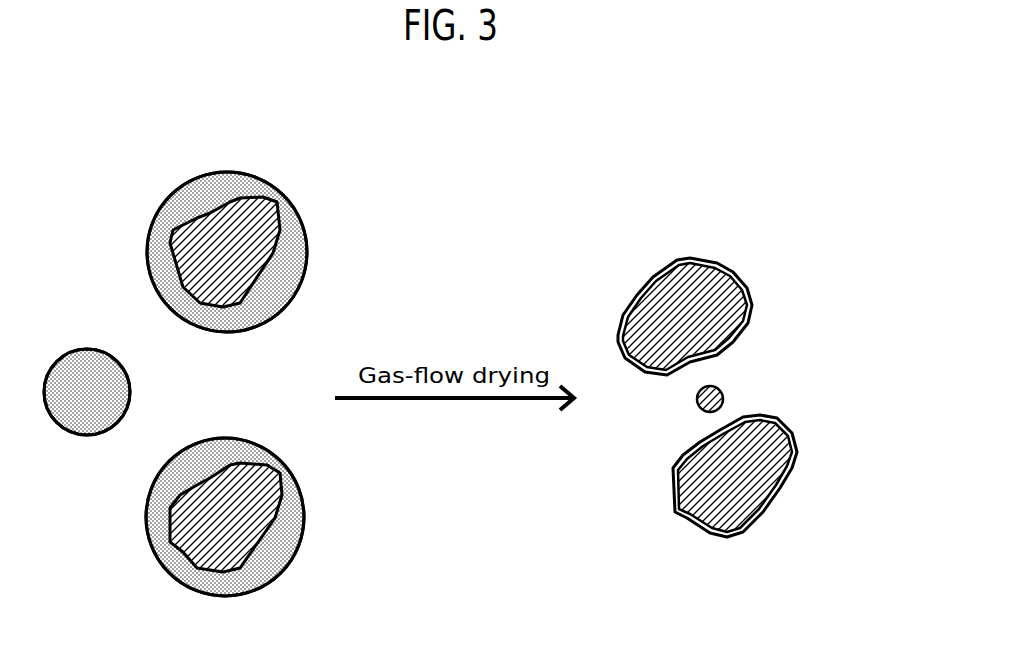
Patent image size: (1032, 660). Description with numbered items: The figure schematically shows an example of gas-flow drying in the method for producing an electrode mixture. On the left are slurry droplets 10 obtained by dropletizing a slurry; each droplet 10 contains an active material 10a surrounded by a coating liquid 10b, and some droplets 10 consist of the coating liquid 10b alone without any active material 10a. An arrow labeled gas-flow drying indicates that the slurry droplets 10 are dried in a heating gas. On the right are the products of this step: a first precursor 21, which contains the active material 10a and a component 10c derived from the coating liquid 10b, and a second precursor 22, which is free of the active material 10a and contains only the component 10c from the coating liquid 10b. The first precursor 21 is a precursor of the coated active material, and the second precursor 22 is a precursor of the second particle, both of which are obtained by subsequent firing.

The slurry droplets 10 is at (240, 162).
The active material 10a is at (228, 298).
The coating liquid 10b is at (272, 307).
The component from the coating liquid 10c is at (751, 306).
The first precursor 21 is at (761, 397).
The second precursor 22 is at (724, 399).